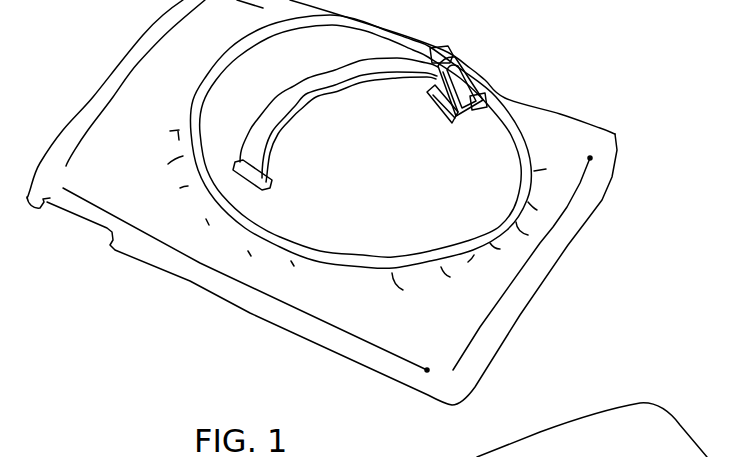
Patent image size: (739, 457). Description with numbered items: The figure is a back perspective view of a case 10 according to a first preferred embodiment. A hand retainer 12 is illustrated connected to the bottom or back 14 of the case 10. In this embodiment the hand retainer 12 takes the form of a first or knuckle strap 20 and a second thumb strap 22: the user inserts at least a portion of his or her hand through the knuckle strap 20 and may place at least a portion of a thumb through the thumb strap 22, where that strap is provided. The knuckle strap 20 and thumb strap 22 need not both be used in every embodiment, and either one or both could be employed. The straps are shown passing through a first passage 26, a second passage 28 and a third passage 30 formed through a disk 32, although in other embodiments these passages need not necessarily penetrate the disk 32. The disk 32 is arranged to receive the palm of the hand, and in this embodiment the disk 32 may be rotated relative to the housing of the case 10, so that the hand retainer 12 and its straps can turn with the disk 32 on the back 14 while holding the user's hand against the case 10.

The case 10 is at (619, 92).
The hand retainer 12 is at (295, 140).
The bottom or back 14 is at (443, 327).
The knuckle strap 20 is at (350, 108).
The thumb strap 22 is at (485, 67).
The first passage 26 is at (270, 201).
The second passage 28 is at (449, 122).
The third passage 30 is at (481, 118).
The disk 32 is at (398, 202).